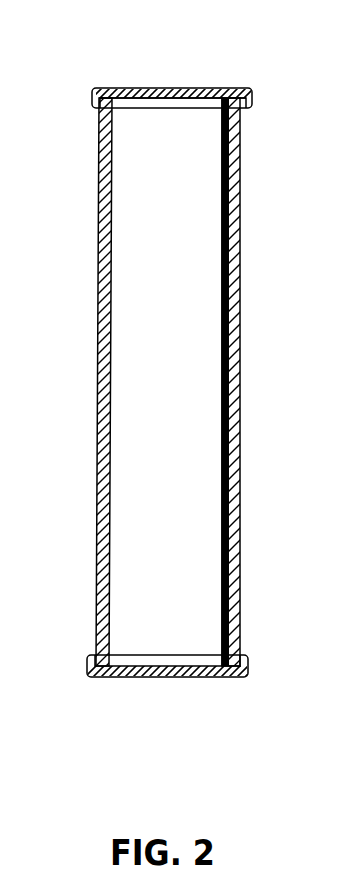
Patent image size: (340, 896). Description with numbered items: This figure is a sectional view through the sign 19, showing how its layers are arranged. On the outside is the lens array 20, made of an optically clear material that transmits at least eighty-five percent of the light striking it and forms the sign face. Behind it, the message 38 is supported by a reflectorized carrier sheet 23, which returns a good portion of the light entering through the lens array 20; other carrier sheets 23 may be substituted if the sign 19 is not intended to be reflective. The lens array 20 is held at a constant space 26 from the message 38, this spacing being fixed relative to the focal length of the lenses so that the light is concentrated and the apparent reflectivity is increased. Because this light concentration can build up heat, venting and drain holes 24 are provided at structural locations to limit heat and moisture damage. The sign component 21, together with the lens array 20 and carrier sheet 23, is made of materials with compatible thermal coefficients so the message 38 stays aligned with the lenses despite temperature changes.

The sign 19 is at (135, 90).
The sign component 21 is at (183, 90).
The lens array 20 is at (98, 330).
The reflective carrier sheet 23 is at (233, 493).
The constant space 26 is at (142, 447).
The message 38 is at (223, 475).
The venting and drain holes 24 is at (172, 677).